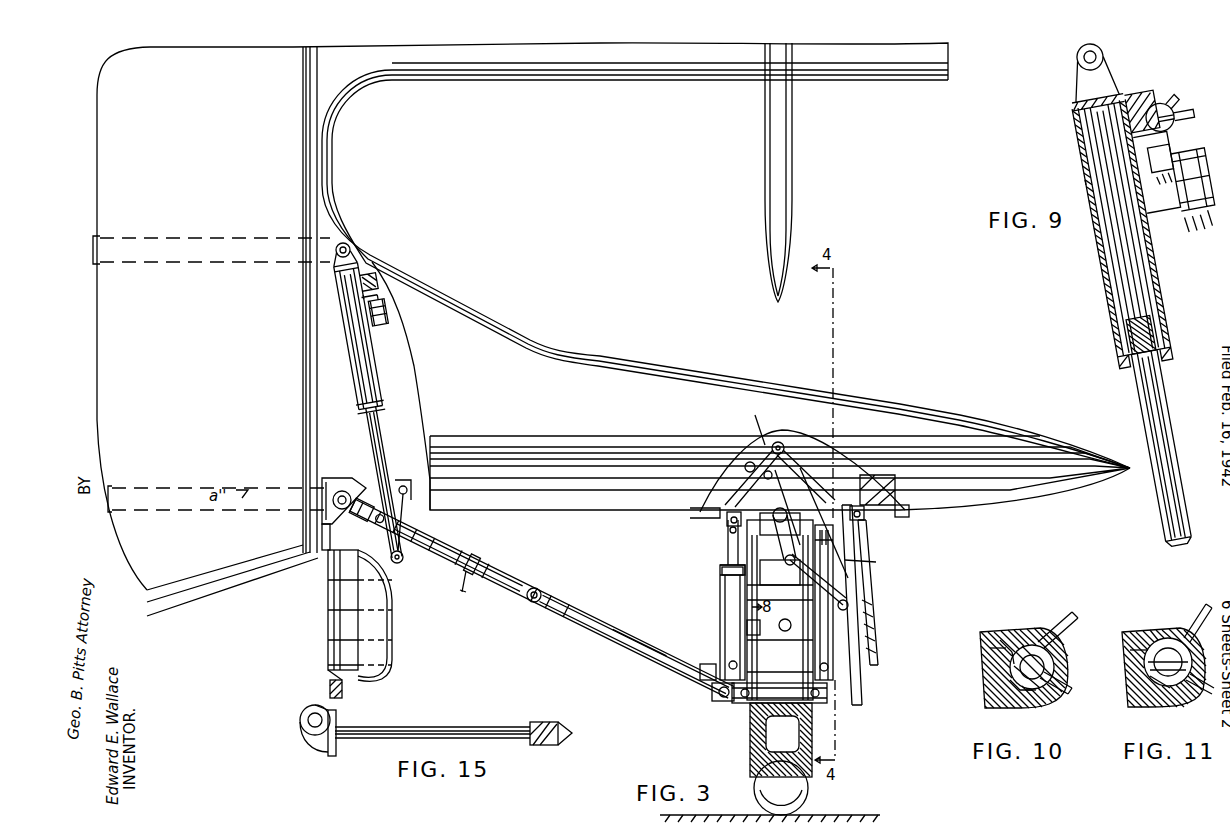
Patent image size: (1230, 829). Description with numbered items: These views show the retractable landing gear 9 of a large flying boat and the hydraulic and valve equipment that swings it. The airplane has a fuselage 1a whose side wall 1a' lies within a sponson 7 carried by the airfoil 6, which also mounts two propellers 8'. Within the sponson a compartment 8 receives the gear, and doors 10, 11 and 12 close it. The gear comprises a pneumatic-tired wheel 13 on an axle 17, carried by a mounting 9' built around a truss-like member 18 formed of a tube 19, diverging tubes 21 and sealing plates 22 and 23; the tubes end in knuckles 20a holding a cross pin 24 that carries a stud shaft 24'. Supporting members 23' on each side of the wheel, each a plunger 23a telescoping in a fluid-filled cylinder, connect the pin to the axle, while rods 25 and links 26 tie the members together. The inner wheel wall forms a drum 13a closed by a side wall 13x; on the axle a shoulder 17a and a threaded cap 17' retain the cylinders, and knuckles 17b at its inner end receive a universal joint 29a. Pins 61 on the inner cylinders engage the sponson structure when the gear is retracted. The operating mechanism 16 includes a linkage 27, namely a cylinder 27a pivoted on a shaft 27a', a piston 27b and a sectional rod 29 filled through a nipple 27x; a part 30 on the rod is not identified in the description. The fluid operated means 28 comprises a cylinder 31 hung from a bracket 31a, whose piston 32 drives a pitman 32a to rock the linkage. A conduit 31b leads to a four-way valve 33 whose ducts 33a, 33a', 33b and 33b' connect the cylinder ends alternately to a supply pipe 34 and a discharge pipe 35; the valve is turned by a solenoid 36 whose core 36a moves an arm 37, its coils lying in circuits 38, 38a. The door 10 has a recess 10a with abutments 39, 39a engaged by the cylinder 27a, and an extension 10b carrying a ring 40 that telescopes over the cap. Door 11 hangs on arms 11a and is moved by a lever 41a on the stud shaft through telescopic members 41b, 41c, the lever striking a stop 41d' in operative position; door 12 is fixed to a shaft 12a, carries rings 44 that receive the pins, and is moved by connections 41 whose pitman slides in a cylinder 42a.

In FIG. 3, the fuselage 1a is at (232, 580).
In FIG. 3, the side wall of the fuselage 1a' is at (288, 300).
In FIG. 3, the airfoil 6 is at (641, 64).
In FIG. 3, the sponson 7 is at (636, 392).
In FIG. 3, the compartment 8 is at (520, 316).
In FIG. 3, the propellers 8' is at (788, 172).
In FIG. 3, the landing gear 9 is at (751, 606).
In FIG. 3, the mounting 9' is at (750, 561).
In FIG. 3, the door 10 is at (330, 622).
In FIG. 3, the recess 10a is at (328, 565).
In FIG. 3, the extension 10b is at (330, 680).
In FIG. 3, the door 11 is at (862, 693).
In FIG. 3, the arms 11a is at (345, 490).
In FIG. 3, the door 12 is at (870, 602).
In FIG. 3, the shaft 12a is at (908, 514).
In FIG. 3, the wheel 13 is at (754, 779).
In FIG. 3, the drum 13a is at (747, 627).
In FIG. 3, the side wall 13x is at (750, 735).
In FIG. 3, the operating mechanism 16 is at (621, 617).
In FIG. 3, the axle 17 is at (744, 718).
In FIG. 15, the axle 17 is at (432, 718).
In FIG. 15, the cap 17' is at (551, 720).
In FIG. 15, the shoulder 17a is at (336, 752).
In FIG. 15, the knuckles 17b is at (311, 738).
In FIG. 3, the truss-like member 18 is at (705, 511).
In FIG. 3, the hollow bar or tube 19 is at (776, 440).
In FIG. 3, the knuckles 20a is at (727, 518).
In FIG. 3, the diverging hollow bars or tubes 21 is at (766, 450).
In FIG. 3, the plates 22 is at (752, 462).
In FIG. 3, the plate 23 is at (776, 602).
In FIG. 3, the supporting members 23' is at (799, 584).
In FIG. 3, the plunger 23a is at (727, 548).
In FIG. 3, the cross pin 24 is at (877, 465).
In FIG. 3, the stud shaft 24' is at (838, 451).
In FIG. 3, the rod 25 is at (784, 586).
In FIG. 3, the link 26 is at (720, 572).
In FIG. 3, the linkage 27 is at (542, 599).
In FIG. 3, the cylinder 27a is at (392, 542).
In FIG. 3, the shaft 27a' is at (297, 513).
In FIG. 3, the piston 27b is at (460, 588).
In FIG. 3, the valved inlet or nipple 27x is at (383, 488).
In FIG. 3, the fluid operated means 28 is at (401, 386).
In FIG. 9, the fluid operated means 28 is at (1072, 243).
In FIG. 3, the sectional rod 29 is at (512, 586).
In FIG. 3, the universal joint 29a is at (722, 696).
In FIG. 3, the collar 30 is at (478, 562).
In FIG. 3, the cylinder 31 is at (352, 366).
In FIG. 9, the cylinder 31 is at (1106, 240).
In FIG. 3, the bracket 31a is at (350, 246).
In FIG. 9, the bracket 31a is at (1133, 95).
In FIG. 10, the bracket 31a is at (990, 648).
In FIG. 11, the bracket 31a is at (1130, 650).
In FIG. 9, the conduit 31b is at (1175, 347).
In FIG. 10, the conduit 31b is at (995, 700).
In FIG. 11, the conduit 31b is at (1135, 700).
In FIG. 9, the piston 32 is at (1125, 334).
In FIG. 3, the pitman 32a is at (388, 455).
In FIG. 9, the pitman 32a is at (1148, 421).
In FIG. 3, the four-way valve 33 is at (378, 268).
In FIG. 9, the four-way valve 33 is at (1162, 100).
In FIG. 10, the four-way valve 33 is at (1031, 652).
In FIG. 10, the duct 33a is at (1054, 666).
In FIG. 11, the duct 33a is at (1164, 638).
In FIG. 10, the duct 33a' is at (1022, 709).
In FIG. 10, the duct 33b is at (1043, 688).
In FIG. 11, the duct 33b is at (1167, 700).
In FIG. 10, the duct 33b' is at (1004, 627).
In FIG. 9, the supply pipe 34 is at (1169, 100).
In FIG. 10, the supply pipe 34 is at (1060, 633).
In FIG. 11, the supply pipe 34 is at (1190, 632).
In FIG. 9, the discharge pipe 35 is at (1180, 124).
In FIG. 10, the discharge pipe 35 is at (1066, 686).
In FIG. 11, the discharge pipe 35 is at (1202, 694).
In FIG. 3, the double acting solenoid 36 is at (395, 305).
In FIG. 9, the double acting solenoid 36 is at (1198, 208).
In FIG. 9, the core 36a is at (1184, 162).
In FIG. 9, the arm 37 is at (1172, 112).
In FIG. 9, the electrical circuit 38 is at (1170, 152).
In FIG. 9, the electrical circuit 38a is at (1190, 239).
In FIG. 3, the abutment 39 is at (403, 486).
In FIG. 3, the abutment 39a is at (390, 555).
In FIG. 3, the ring 40 is at (343, 690).
In FIG. 3, the connections 41 is at (878, 561).
In FIG. 3, the lever 41a is at (815, 447).
In FIG. 3, the pitman 41b is at (810, 585).
In FIG. 3, the cylinder 41c is at (848, 602).
In FIG. 3, the stop 41d' is at (746, 391).
In FIG. 3, the cylinder 42a is at (860, 590).
In FIG. 3, the rings 44 is at (876, 650).
In FIG. 3, the pins 61 is at (704, 667).